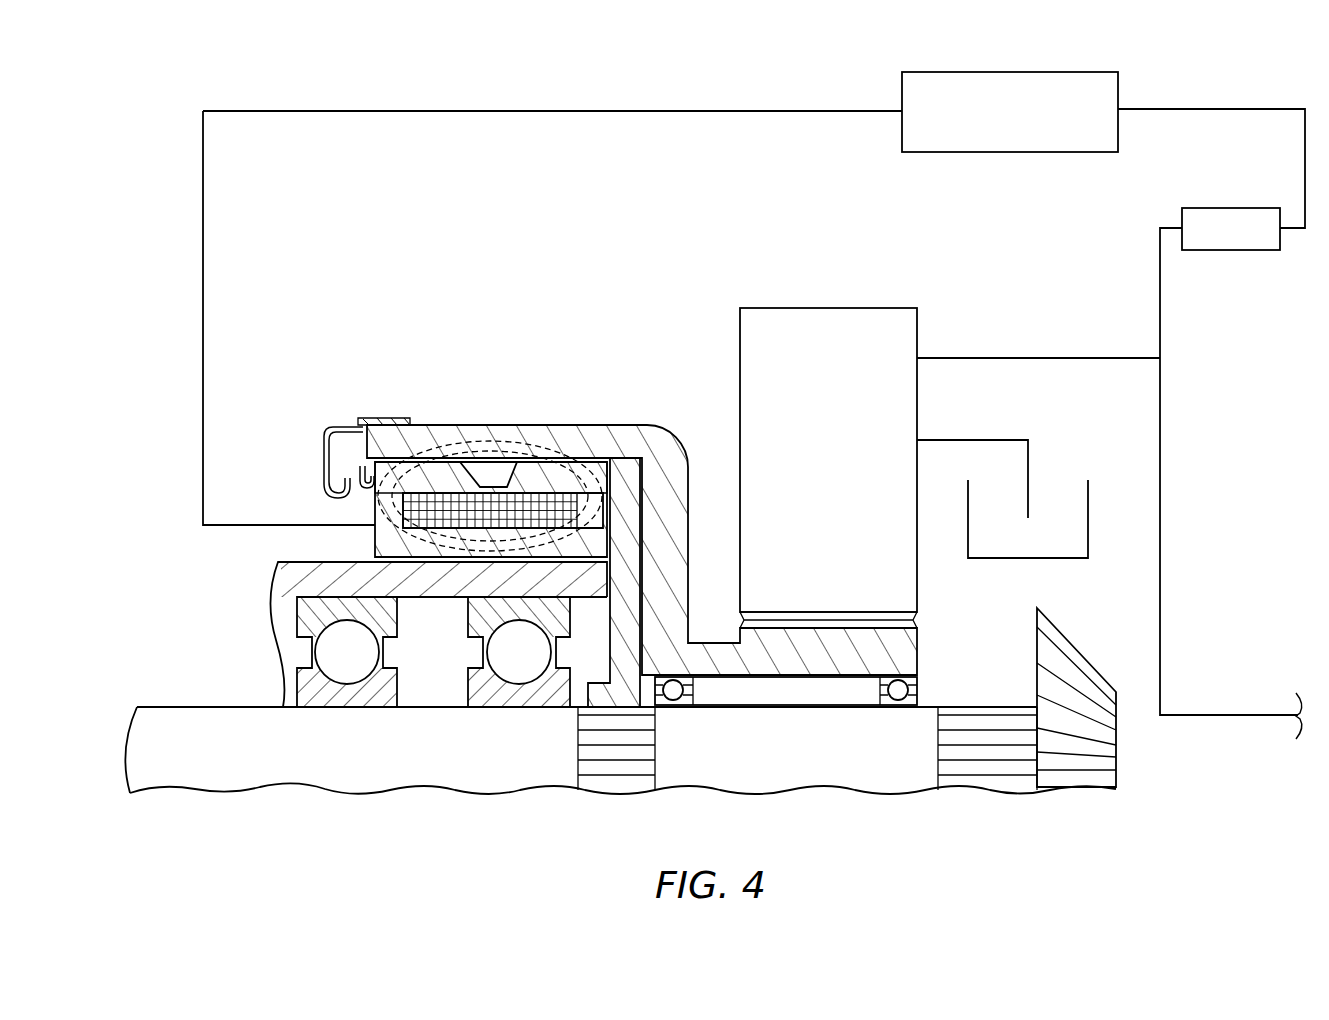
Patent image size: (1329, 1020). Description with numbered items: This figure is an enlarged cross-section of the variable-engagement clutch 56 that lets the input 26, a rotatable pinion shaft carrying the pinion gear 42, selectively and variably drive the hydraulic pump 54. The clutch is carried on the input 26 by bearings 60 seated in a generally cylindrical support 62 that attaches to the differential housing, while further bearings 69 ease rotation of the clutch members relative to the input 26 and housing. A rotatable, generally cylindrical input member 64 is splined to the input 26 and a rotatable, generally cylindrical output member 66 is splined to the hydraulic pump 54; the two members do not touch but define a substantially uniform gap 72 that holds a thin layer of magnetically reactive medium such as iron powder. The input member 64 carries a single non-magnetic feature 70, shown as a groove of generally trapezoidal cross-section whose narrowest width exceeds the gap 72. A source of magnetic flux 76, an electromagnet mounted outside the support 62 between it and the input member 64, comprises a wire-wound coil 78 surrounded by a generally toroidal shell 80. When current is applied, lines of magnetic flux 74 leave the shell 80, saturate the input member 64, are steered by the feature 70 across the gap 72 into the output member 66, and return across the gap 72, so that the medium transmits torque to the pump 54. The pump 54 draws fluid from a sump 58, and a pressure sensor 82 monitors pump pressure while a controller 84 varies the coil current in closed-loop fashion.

The controller 84 is at (928, 78).
The pressure sensor 82 is at (1207, 215).
The hydraulic pump 54 is at (839, 477).
The sump 58 is at (1068, 562).
The input member 64 is at (627, 555).
The output member 66 is at (672, 472).
The non-magnetic feature 70 is at (495, 445).
The gap 72 is at (612, 468).
The source of magnetic flux 76 is at (366, 547).
The wire-wound coil 78 is at (432, 510).
The toroidal shell 80 is at (377, 513).
The variable-engagement clutch 56 is at (513, 392).
The lines of magnetic flux 74 is at (528, 470).
The support 62 is at (290, 588).
The bearings 60 is at (472, 687).
The bearings 69 is at (917, 681).
The input 26 is at (369, 769).
The pinion gear 42 is at (1073, 678).